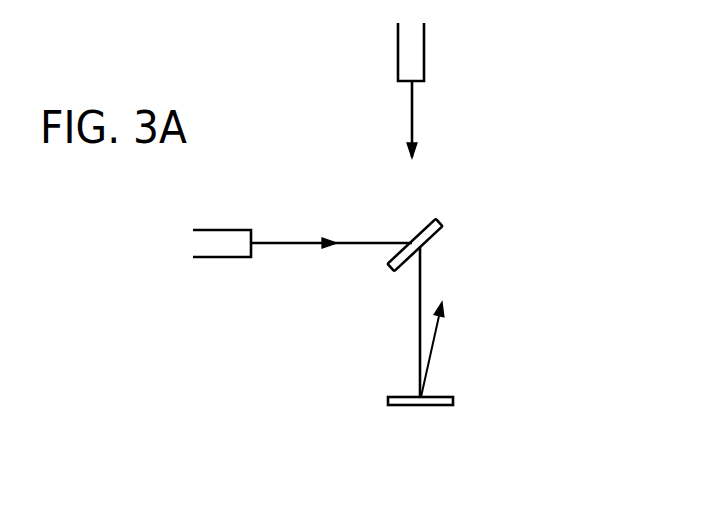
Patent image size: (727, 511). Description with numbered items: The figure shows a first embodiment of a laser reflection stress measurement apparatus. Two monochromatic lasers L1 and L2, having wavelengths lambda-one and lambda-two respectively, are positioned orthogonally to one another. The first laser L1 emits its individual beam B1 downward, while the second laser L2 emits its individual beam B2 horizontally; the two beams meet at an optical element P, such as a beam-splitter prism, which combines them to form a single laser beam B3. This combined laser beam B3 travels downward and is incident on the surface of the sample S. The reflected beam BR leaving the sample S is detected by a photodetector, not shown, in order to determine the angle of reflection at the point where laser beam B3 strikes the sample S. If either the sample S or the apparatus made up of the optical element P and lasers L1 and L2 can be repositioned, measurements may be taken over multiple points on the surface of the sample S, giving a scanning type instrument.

The monochromatic laser L1 is at (424, 45).
The laser beam B1 is at (412, 110).
The monochromatic laser L2 is at (220, 258).
The laser beam B2 is at (288, 241).
The optical element P is at (439, 233).
The laser beam B3 is at (419, 284).
The reflected beam BR is at (433, 342).
The sample S is at (441, 406).